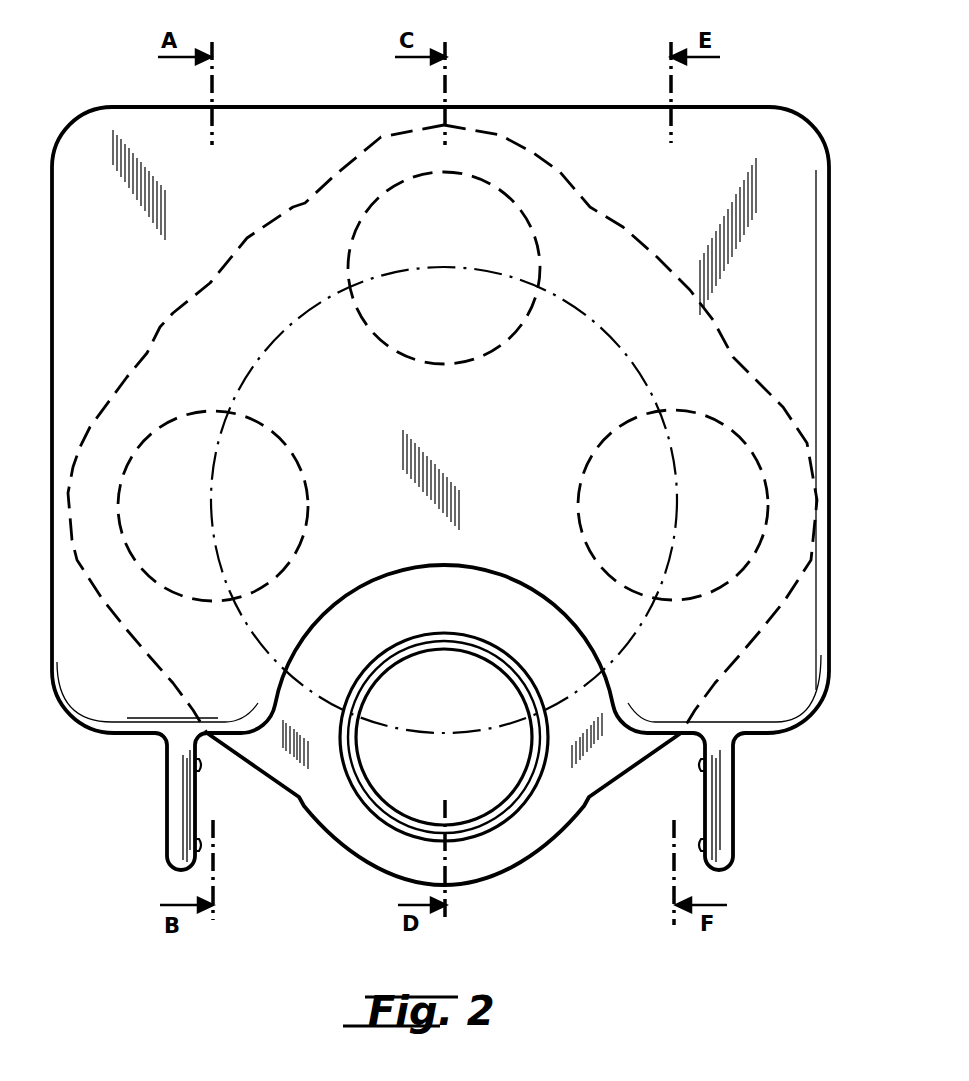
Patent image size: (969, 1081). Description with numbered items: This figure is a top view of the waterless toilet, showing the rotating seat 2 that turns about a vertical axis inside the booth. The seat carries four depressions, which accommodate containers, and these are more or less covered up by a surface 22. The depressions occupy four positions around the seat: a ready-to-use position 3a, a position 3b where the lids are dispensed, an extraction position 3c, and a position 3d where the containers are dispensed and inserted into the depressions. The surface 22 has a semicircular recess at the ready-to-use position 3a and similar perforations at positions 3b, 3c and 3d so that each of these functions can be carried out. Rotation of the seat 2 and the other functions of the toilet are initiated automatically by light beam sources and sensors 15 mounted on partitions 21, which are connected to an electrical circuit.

The rotating seat 2 is at (600, 788).
The ready-to-use position 3a is at (410, 790).
The lid dispensing position 3b is at (295, 466).
The extraction position 3c is at (497, 348).
The container dispensing position 3d is at (583, 472).
The light beam sources and sensors 15 is at (202, 767).
The partitions 21 is at (722, 820).
The surface 22 is at (797, 697).